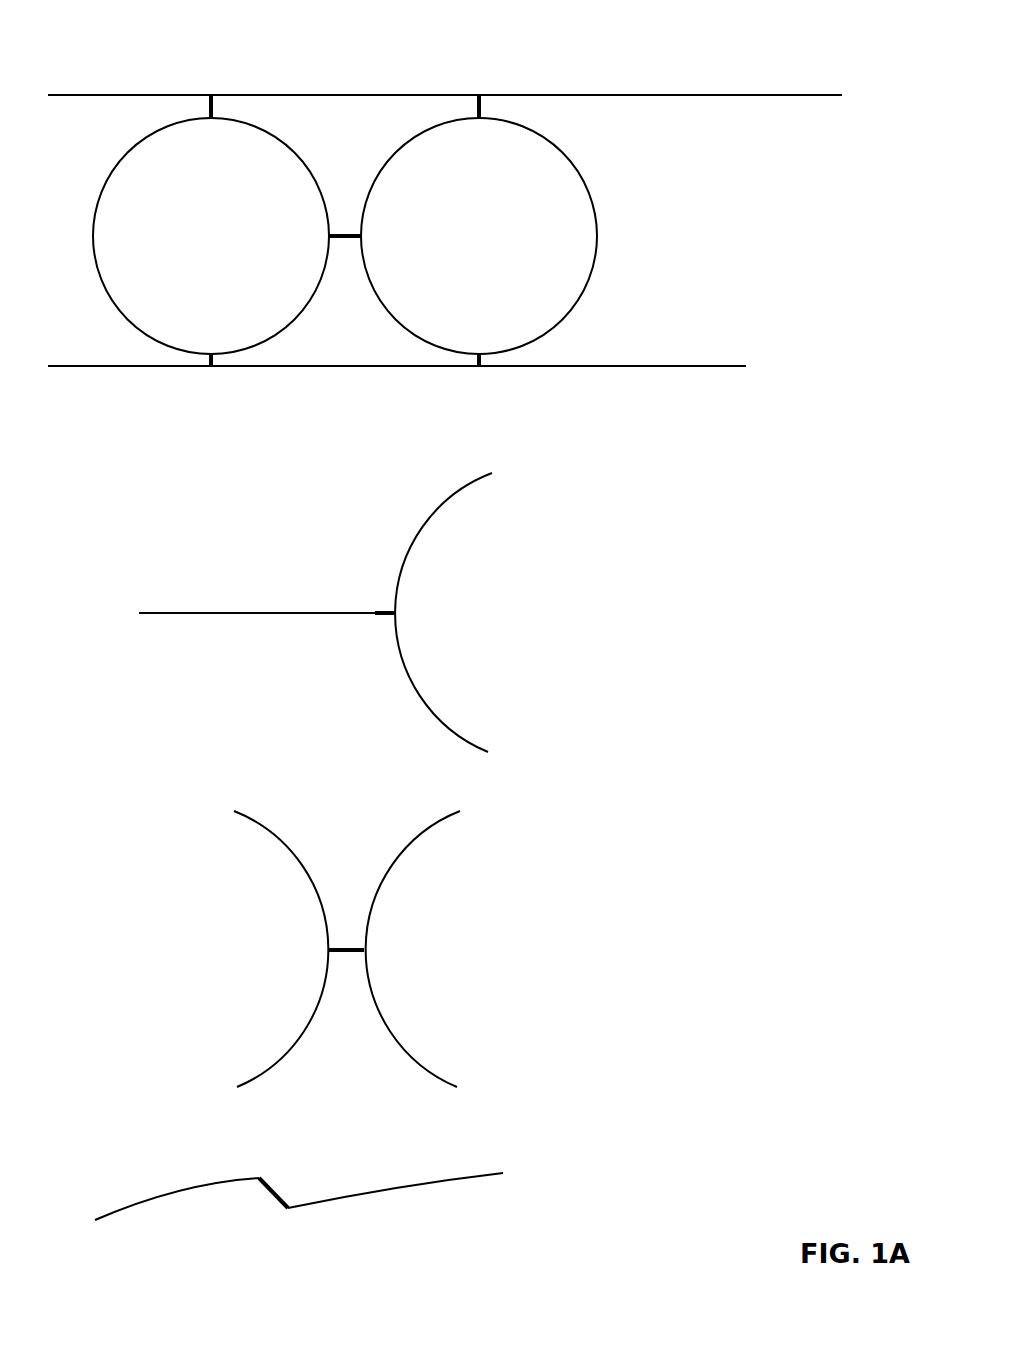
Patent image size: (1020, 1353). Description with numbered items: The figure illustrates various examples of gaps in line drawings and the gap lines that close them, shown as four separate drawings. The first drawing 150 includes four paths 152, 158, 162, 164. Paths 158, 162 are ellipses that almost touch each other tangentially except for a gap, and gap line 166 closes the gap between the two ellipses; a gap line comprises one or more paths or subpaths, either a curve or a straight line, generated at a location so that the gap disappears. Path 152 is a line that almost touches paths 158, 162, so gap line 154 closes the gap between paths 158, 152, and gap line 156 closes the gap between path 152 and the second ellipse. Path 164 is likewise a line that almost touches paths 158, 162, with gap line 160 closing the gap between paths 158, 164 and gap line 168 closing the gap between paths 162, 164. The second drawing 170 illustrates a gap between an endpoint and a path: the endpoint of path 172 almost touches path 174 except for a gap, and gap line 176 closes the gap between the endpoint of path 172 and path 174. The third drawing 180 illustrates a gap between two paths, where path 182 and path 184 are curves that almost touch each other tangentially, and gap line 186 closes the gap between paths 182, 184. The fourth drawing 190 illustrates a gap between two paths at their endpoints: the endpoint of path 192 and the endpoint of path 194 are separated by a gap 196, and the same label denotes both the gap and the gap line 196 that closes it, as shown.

The drawing 150 is at (800, 70).
The path 152 is at (108, 95).
The gap line 154 is at (215, 105).
The gap line 156 is at (485, 105).
The path 158 is at (112, 305).
The gap line 160 is at (218, 362).
The path 162 is at (600, 235).
The path 164 is at (640, 367).
The gap line 166 is at (340, 232).
The gap line 168 is at (488, 360).
The drawing 170 is at (553, 480).
The path 172 is at (197, 615).
The path 174 is at (422, 530).
The gap line 176 is at (388, 616).
The drawing 180 is at (522, 782).
The path 182 is at (268, 825).
The path 184 is at (445, 818).
The gap line 186 is at (352, 957).
The drawing 190 is at (510, 1133).
The path 192 is at (157, 1203).
The path 194 is at (400, 1188).
The gap line 196 is at (268, 1193).